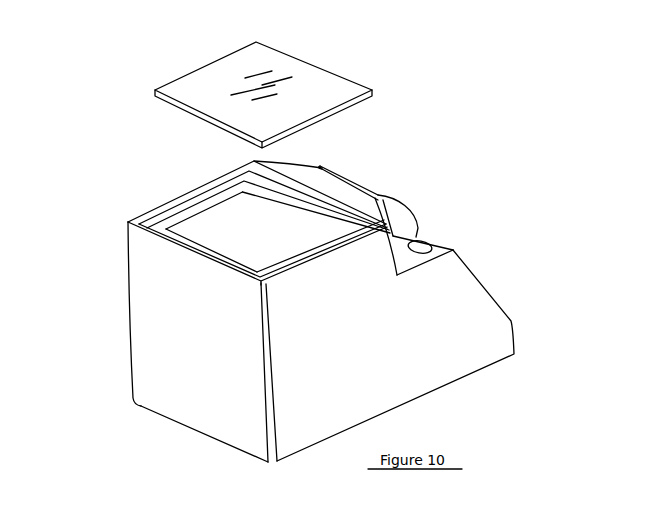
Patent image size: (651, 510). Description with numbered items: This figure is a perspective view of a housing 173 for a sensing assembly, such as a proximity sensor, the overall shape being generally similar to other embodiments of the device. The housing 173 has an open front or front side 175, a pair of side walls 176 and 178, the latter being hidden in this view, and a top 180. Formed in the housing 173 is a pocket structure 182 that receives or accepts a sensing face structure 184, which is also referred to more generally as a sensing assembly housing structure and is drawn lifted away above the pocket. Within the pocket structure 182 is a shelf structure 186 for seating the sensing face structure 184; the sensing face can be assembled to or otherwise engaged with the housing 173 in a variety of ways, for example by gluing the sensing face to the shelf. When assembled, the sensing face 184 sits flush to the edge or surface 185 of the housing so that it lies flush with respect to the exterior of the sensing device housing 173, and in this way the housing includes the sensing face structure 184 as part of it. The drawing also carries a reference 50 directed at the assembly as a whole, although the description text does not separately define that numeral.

The sensor assembly 50 is at (428, 509).
The sensing face structure 184 is at (317, 77).
The housing 173 is at (463, 378).
The side wall 176 is at (363, 350).
The top 180 is at (210, 350).
The side wall 178 is at (132, 355).
The edge or surface 185 is at (147, 217).
The shelf structure 186 is at (223, 202).
The pocket structure 182 is at (187, 207).
The open front or front side 175 is at (262, 214).